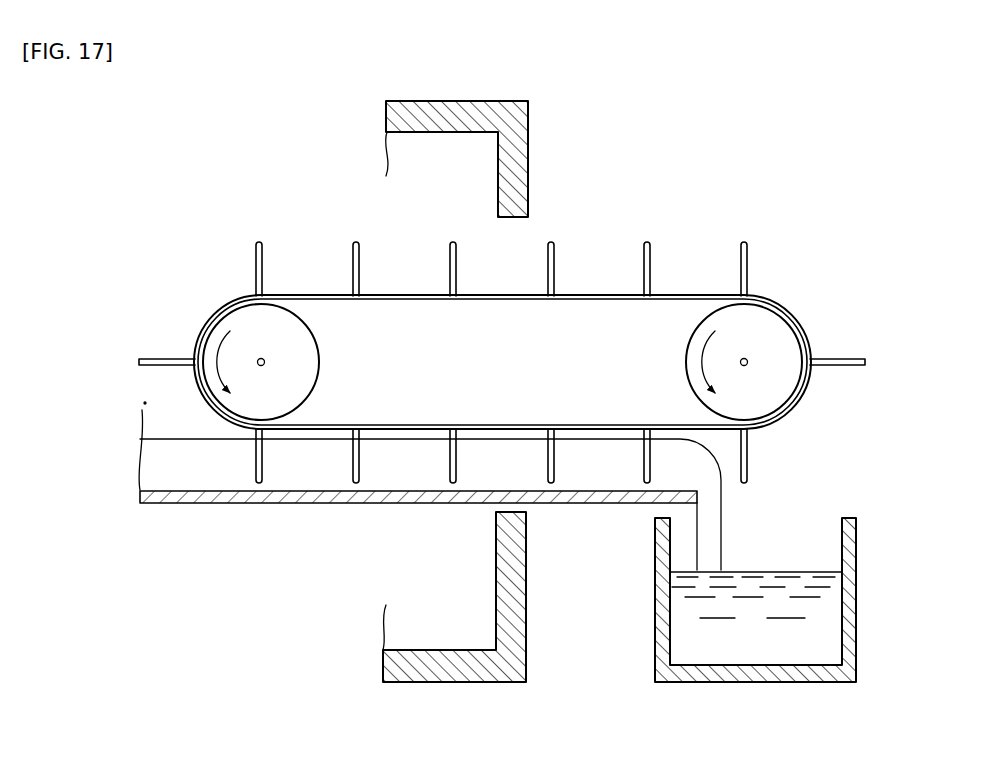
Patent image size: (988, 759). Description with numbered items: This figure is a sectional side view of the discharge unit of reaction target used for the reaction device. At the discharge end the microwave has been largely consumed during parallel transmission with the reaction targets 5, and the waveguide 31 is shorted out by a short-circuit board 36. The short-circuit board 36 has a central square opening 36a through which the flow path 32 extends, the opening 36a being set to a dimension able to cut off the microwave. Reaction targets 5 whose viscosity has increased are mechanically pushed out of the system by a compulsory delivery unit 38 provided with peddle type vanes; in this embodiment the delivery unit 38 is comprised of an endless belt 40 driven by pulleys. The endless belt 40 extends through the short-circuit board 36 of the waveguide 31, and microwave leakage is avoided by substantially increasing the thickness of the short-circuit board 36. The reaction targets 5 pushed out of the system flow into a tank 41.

The waveguide 31 is at (522, 156).
The short-circuit board 36 is at (513, 165).
The central square opening 36a is at (510, 232).
The compulsory delivery unit 38 is at (403, 295).
The endless belt 40 is at (665, 295).
The reaction targets 5 is at (195, 460).
The flow path 32 is at (258, 505).
The tank 41 is at (657, 598).